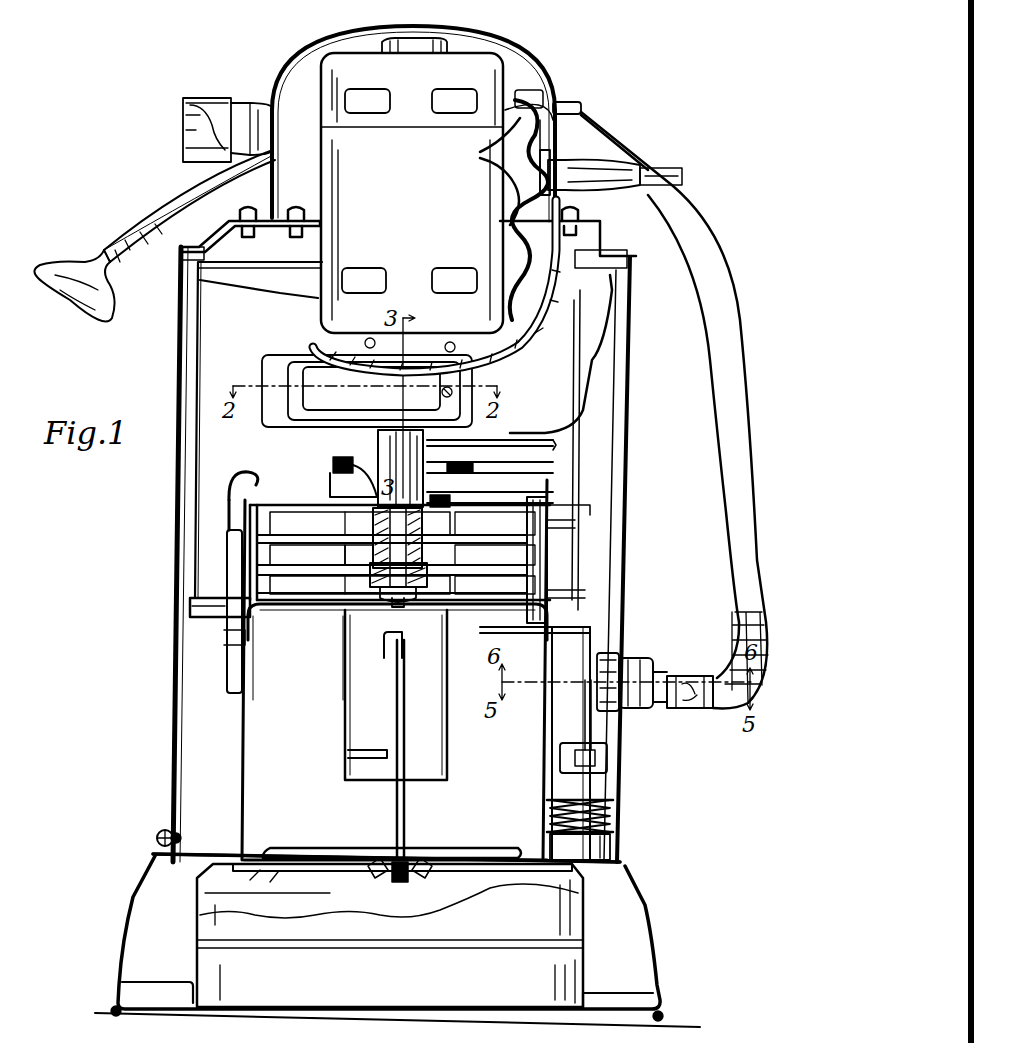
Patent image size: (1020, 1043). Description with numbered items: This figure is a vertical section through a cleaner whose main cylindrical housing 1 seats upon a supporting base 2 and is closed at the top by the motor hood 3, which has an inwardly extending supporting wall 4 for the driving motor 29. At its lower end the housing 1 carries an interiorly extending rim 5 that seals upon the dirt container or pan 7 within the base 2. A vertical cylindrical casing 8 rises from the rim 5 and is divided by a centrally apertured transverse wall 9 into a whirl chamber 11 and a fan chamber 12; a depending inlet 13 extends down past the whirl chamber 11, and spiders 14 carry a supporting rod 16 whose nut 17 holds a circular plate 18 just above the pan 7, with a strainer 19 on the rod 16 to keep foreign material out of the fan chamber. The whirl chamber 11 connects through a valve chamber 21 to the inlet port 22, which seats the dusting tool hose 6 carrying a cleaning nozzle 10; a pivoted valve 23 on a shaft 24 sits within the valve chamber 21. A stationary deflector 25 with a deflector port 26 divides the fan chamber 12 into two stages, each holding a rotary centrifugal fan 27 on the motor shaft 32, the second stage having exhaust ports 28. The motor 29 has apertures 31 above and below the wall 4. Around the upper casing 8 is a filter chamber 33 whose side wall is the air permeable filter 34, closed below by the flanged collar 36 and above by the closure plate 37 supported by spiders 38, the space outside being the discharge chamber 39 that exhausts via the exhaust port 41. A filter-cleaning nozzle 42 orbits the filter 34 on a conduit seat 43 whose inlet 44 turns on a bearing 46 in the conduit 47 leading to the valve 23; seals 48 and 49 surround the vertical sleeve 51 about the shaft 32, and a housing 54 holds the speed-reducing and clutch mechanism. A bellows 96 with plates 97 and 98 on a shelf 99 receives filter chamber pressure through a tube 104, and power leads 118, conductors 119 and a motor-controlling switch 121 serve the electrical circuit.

The main housing 1 is at (178, 534).
The supporting base 2 is at (130, 920).
The motor hood 3 is at (556, 77).
The inwardly extending supporting wall 4 is at (284, 221).
The interiorly extending rim 5 is at (198, 855).
The dusting tool hose 6 is at (728, 512).
The dirt container or pan 7 is at (390, 935).
The vertical cylindrical casing 8 is at (240, 725).
The transverse wall 9 is at (270, 615).
The cleaning nozzle 10 is at (66, 312).
The whirl chamber 11 is at (395, 670).
The fan chamber 12 is at (400, 552).
The depending inlet 13 is at (347, 702).
The spiders 14 is at (403, 650).
The supporting rod 16 is at (405, 806).
The nut 17 is at (372, 875).
The circular plate 18 is at (460, 850).
The strainer 19 is at (372, 760).
The valve chamber 21 is at (535, 651).
The inlet port 22 is at (650, 710).
The valve 23 is at (571, 743).
The shaft 24 is at (608, 752).
The stationary deflector 25 is at (307, 554).
The deflector port 26 is at (376, 548).
The rotary centrifugal fan 27 is at (360, 554).
The exhaust ports 28 is at (270, 490).
The driving motor 29 is at (412, 193).
The apertures 31 is at (432, 90).
The motor shaft 32 is at (422, 527).
The filter chamber 33 is at (229, 439).
The air permeable filter 34 is at (201, 375).
The flanged collar 36 is at (210, 598).
The closure plate 37 is at (257, 298).
The spiders 38 is at (205, 250).
The discharge chamber 39 is at (183, 420).
The exhaust port 41 is at (204, 98).
The filter-cleaning nozzle 42 is at (598, 404).
The conduit seat 43 is at (491, 451).
The downwardly-facing inlet 44 is at (431, 468).
The bearing 46 is at (333, 466).
The conduit 47 is at (547, 549).
The lower seal 48 is at (434, 497).
The seal 49 is at (436, 413).
The vertical sleeve 51 is at (390, 455).
The housing 54 is at (367, 391).
The pressure-responsive bellows 96 is at (614, 805).
The upper plate 97 is at (566, 800).
The lower plate 98 is at (614, 826).
The shelf 99 is at (560, 838).
The tube or conduit 104 is at (228, 686).
The power leads 118 is at (502, 160).
The conductors 119 is at (512, 362).
The motor-controlling switch 121 is at (582, 108).